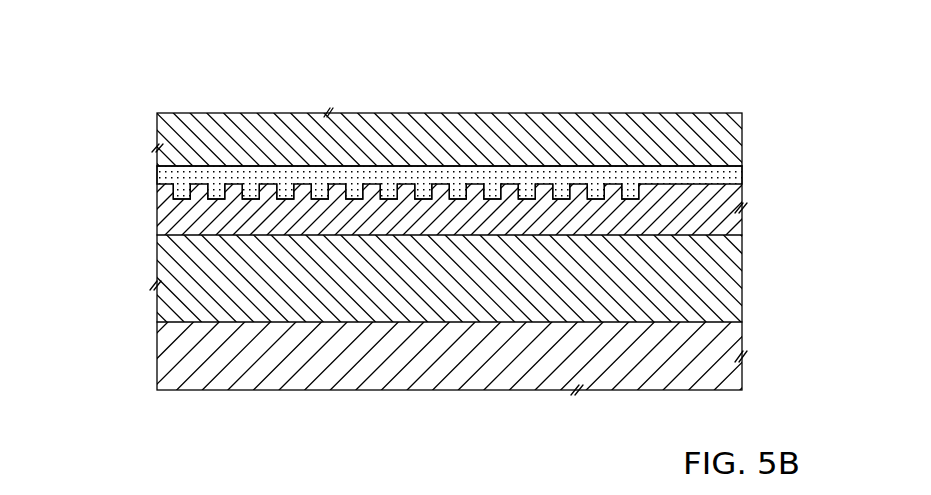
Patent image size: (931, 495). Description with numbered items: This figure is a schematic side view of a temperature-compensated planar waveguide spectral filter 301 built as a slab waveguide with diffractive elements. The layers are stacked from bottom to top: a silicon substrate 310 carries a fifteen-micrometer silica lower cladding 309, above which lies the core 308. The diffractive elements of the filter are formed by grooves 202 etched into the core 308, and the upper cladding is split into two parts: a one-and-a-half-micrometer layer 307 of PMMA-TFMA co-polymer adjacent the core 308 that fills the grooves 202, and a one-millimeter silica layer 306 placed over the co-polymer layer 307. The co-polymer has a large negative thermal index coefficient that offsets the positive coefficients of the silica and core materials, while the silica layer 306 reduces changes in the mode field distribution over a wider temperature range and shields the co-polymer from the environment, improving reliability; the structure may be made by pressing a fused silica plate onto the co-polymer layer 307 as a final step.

The layered structure 301 is at (147, 90).
The grooves 202 is at (630, 192).
The silica layer 306 is at (167, 131).
The co-polymer layer 307 is at (728, 175).
The core 308 is at (170, 220).
The silica lower cladding 309 is at (707, 295).
The silicon substrate 310 is at (193, 358).